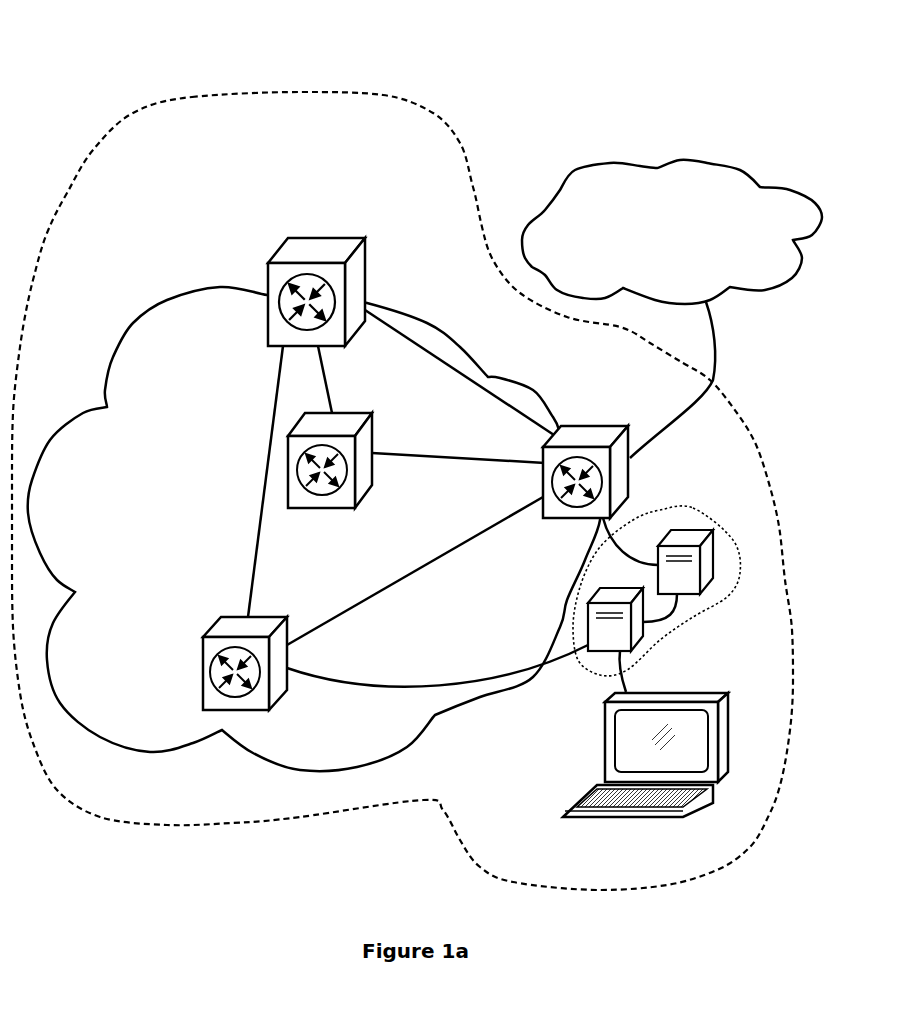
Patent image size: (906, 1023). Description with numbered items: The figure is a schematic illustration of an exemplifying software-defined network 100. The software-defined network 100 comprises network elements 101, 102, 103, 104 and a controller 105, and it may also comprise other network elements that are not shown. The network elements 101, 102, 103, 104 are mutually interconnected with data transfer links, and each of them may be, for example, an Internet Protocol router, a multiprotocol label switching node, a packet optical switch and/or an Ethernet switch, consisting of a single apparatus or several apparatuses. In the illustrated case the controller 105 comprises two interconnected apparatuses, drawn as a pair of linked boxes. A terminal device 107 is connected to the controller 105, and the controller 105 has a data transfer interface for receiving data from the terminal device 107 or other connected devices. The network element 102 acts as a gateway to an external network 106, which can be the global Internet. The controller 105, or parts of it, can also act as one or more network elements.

The software-defined network 100 is at (192, 97).
The network element 101 is at (203, 697).
The network element 102 is at (617, 427).
The network element 103 is at (343, 413).
The network element 104 is at (271, 263).
The controller 105 is at (689, 508).
The external network 106 is at (658, 239).
The terminal device 107 is at (715, 692).